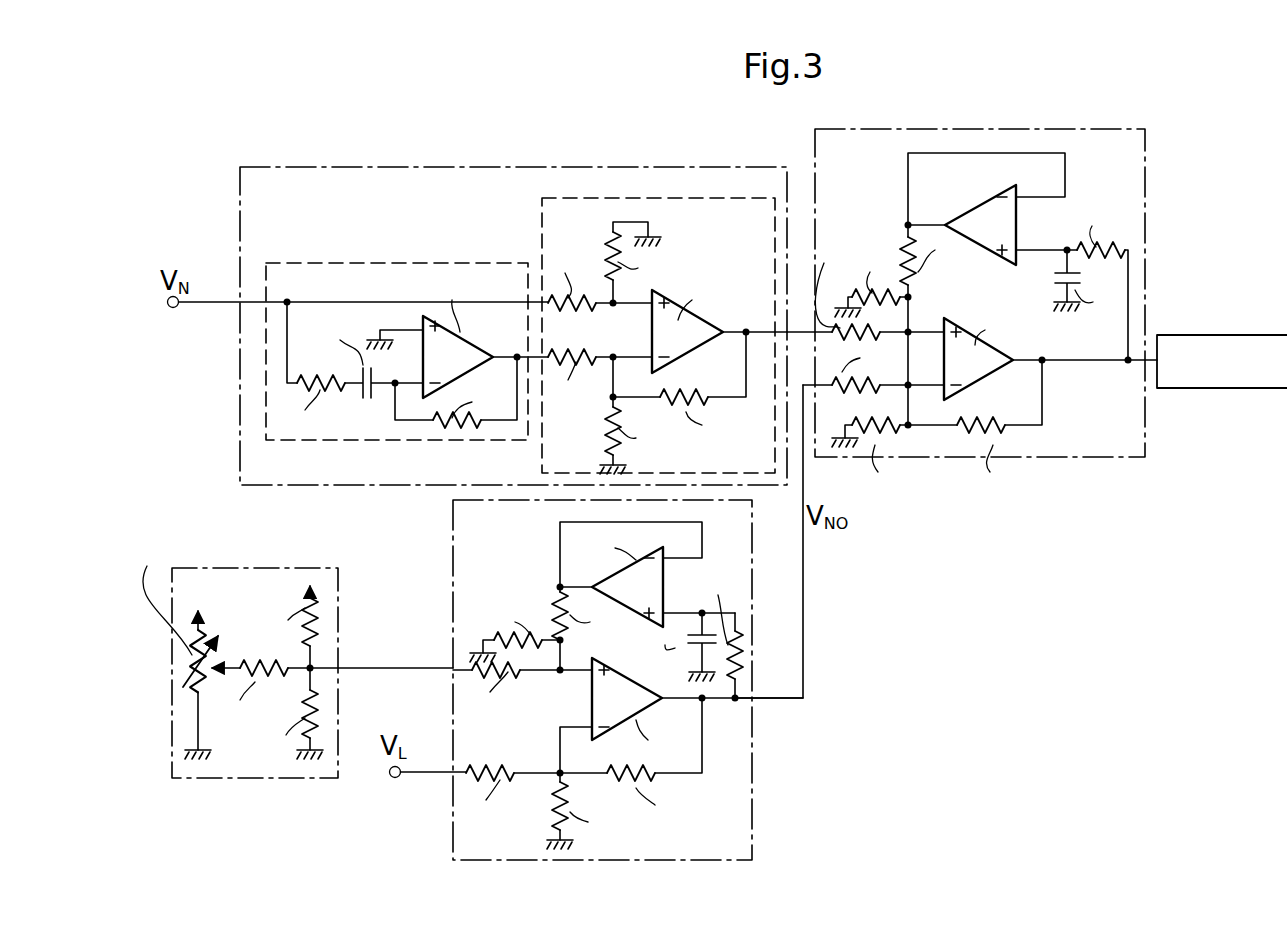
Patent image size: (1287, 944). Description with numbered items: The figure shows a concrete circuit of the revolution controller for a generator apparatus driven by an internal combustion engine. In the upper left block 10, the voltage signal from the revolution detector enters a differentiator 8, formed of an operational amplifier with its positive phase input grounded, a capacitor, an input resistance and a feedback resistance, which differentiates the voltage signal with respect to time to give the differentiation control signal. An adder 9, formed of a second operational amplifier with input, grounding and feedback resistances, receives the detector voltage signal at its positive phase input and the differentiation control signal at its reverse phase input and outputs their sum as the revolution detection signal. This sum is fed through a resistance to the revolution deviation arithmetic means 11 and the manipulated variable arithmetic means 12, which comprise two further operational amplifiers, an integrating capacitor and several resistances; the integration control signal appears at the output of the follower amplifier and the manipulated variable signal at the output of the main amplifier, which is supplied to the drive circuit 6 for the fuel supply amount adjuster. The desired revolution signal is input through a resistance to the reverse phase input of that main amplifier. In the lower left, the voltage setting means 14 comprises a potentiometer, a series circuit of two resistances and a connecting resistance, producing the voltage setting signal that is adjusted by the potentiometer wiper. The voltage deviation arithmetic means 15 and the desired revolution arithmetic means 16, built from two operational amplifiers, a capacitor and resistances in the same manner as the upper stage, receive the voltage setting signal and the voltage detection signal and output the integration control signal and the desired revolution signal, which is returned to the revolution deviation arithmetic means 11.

The drive circuit 6 is at (1208, 333).
The differentiator 8 is at (377, 262).
The adder 9 is at (647, 196).
The revolution detection signal circuit 10 is at (425, 164).
The revolution deviation arithmetic means 11 is at (1148, 194).
The manipulated variable arithmetic means 12 is at (972, 314).
The voltage setting means 14 is at (249, 566).
The voltage deviation arithmetic means 15 is at (450, 525).
The desired revolution arithmetic means 16 is at (628, 680).